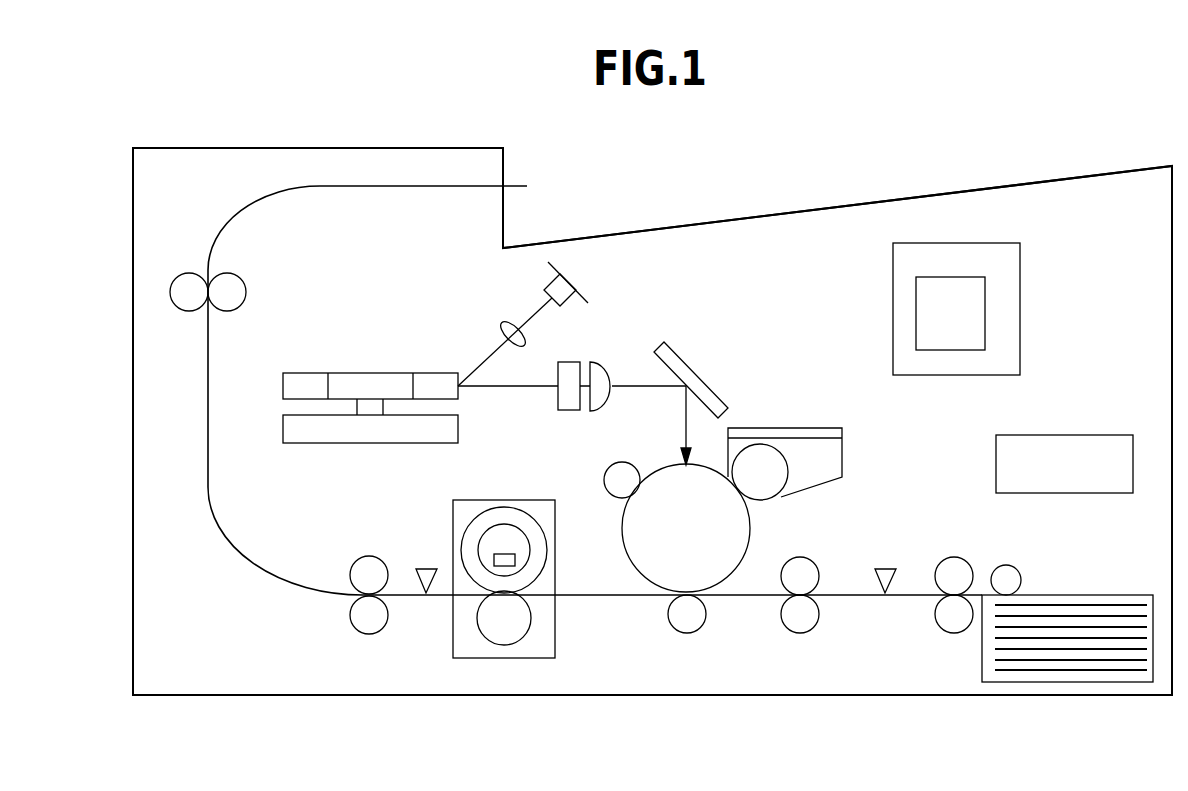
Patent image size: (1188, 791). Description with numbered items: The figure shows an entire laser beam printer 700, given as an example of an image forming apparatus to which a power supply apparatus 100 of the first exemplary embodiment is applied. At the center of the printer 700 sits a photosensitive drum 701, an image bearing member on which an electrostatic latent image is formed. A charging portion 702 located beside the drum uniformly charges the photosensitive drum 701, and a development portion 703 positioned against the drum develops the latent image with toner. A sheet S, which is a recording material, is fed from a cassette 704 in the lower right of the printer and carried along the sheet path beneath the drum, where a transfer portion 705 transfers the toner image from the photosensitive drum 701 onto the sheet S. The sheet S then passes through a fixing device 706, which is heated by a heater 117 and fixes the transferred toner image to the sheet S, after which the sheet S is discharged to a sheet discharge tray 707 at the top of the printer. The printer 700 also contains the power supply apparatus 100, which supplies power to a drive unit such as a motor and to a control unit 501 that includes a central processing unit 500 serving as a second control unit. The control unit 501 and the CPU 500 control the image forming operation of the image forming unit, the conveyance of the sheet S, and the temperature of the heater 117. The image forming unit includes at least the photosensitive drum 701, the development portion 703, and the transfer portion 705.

The laser beam printer 700 is at (797, 696).
The photosensitive drum 701 is at (624, 546).
The charging portion 702 is at (622, 462).
The development portion 703 is at (842, 450).
The cassette 704 is at (1088, 595).
The transfer portion 705 is at (687, 633).
The fixing device 706 is at (555, 633).
The sheet discharge tray 707 is at (680, 226).
The heater 117 is at (493, 560).
The central processing unit (CPU) 500 is at (916, 318).
The control unit 501 is at (1020, 300).
The power supply apparatus 100 is at (1065, 435).
The sheet S is at (1050, 671).